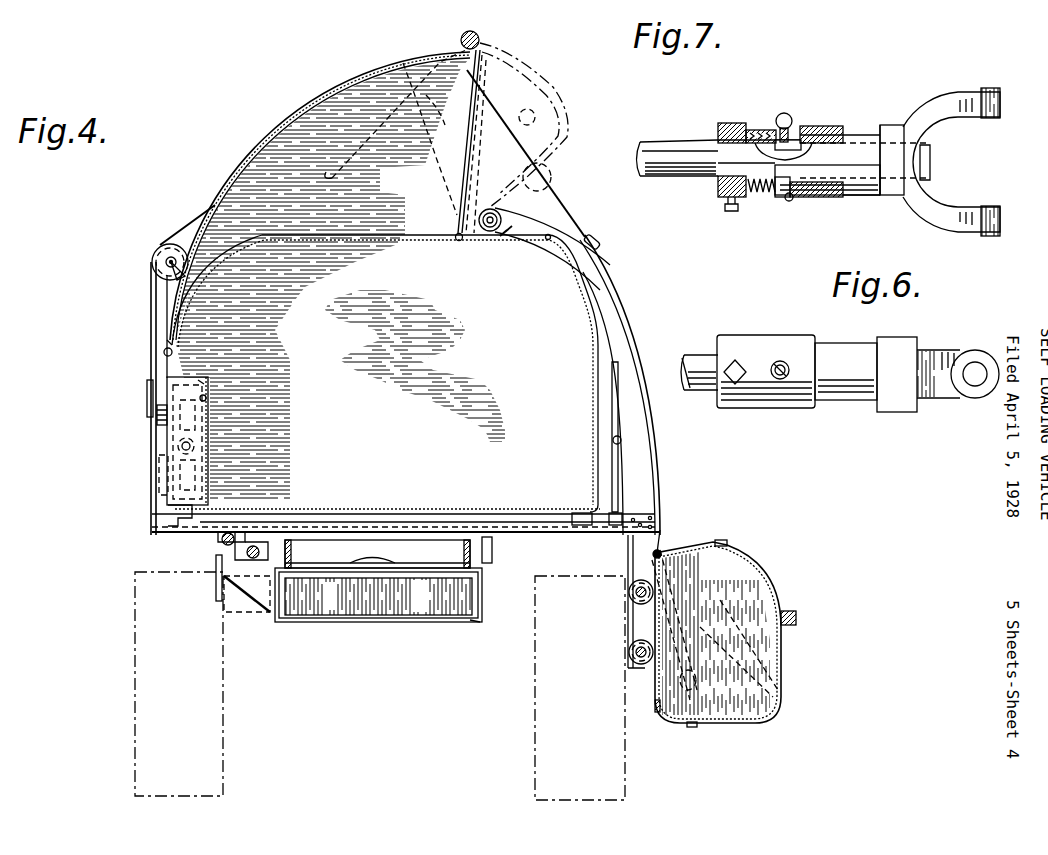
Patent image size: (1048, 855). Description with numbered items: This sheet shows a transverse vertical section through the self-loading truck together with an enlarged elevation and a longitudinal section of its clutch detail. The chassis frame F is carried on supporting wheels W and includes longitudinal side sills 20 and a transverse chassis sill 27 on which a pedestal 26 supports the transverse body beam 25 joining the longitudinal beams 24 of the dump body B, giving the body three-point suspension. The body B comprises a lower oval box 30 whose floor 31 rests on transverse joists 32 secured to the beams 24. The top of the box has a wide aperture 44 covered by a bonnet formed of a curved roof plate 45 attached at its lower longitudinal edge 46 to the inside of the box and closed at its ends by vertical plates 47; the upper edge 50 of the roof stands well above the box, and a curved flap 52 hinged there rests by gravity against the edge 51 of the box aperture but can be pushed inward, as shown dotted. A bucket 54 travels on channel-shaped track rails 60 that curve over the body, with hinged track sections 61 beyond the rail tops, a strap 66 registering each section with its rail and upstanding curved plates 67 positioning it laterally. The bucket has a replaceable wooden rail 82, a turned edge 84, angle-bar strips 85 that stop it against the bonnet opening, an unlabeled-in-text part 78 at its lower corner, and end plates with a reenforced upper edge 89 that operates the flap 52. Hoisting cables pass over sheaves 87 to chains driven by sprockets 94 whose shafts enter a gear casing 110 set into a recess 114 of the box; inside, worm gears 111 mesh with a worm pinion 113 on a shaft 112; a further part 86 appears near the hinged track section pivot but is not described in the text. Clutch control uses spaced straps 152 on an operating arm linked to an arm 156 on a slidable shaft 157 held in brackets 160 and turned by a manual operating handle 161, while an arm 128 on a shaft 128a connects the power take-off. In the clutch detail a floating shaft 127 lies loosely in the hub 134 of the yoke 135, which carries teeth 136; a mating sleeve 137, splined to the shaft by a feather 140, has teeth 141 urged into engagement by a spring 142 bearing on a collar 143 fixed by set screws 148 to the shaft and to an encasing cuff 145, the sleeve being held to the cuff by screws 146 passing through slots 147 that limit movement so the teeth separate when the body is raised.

In FIG. 4, the longitudinal side sill 20 is at (482, 595).
In FIG. 4, the longitudinal beam 24 is at (492, 552).
In FIG. 4, the transverse body beam 25 is at (377, 552).
In FIG. 4, the pedestal 26 is at (372, 565).
In FIG. 4, the transverse chassis sill 27 is at (378, 595).
In FIG. 4, the box 30 is at (596, 386).
In FIG. 4, the floor 31 is at (300, 509).
In FIG. 4, the transverse joist 32 is at (558, 534).
In FIG. 4, the aperture 44 is at (370, 237).
In FIG. 4, the curved roof plate 45 is at (300, 118).
In FIG. 4, the lower longitudinal edge 46 is at (178, 390).
In FIG. 4, the vertical plate 47 is at (262, 165).
In FIG. 4, the upper edge of the bonnet roof 50 is at (462, 44).
In FIG. 4, the edge of the box aperture 51 is at (462, 241).
In FIG. 4, the curved flap 52 is at (455, 160).
In FIG. 4, the bucket 54 is at (782, 662).
In FIG. 4, the track rail 60 is at (620, 333).
In FIG. 4, the hinged track section 61 is at (527, 207).
In FIG. 4, the strap 66 is at (565, 233).
In FIG. 4, the upstanding curved plate 67 is at (602, 245).
In FIG. 4, the bucket pivot 78 is at (697, 684).
In FIG. 4, the wooden rail 82 is at (796, 616).
In FIG. 4, the turned longitudinal edge 84 is at (665, 556).
In FIG. 4, the angle-bar strip 85 is at (700, 632).
In FIG. 4, the cable 86 is at (502, 242).
In FIG. 4, the sheave 87 is at (145, 398).
In FIG. 4, the reenforced upper edge 89 is at (740, 546).
In FIG. 4, the drive sprocket 94 is at (165, 420).
In FIG. 4, the gear casing 110 is at (196, 392).
In FIG. 4, the worm gear 111 is at (205, 399).
In FIG. 4, the shaft 112 is at (212, 436).
In FIG. 4, the worm pinion 113 is at (210, 424).
In FIG. 4, the recess 114 is at (203, 380).
In FIG. 7, the floating shaft 127 is at (668, 137).
In FIG. 6, the floating shaft 127 is at (700, 348).
In FIG. 4, the arm 128 is at (216, 594).
In FIG. 4, the shaft 128a is at (214, 553).
In FIG. 7, the hub 134 is at (858, 128).
In FIG. 6, the hub 134 is at (846, 402).
In FIG. 7, the yoke 135 is at (930, 115).
In FIG. 6, the yoke 135 is at (930, 360).
In FIG. 7, the teeth 136 is at (825, 170).
In FIG. 7, the mating sleeve 137 is at (790, 202).
In FIG. 7, the feather 140 is at (775, 148).
In FIG. 7, the teeth 141 is at (848, 183).
In FIG. 7, the spring 142 is at (758, 130).
In FIG. 7, the collar 143 is at (720, 128).
In FIG. 7, the encasing cuff 145 is at (770, 200).
In FIG. 7, the screw 146 is at (786, 114).
In FIG. 6, the screw 146 is at (782, 360).
In FIG. 7, the slot 147 is at (822, 128).
In FIG. 6, the slot 147 is at (790, 366).
In FIG. 7, the set screw 148 is at (730, 211).
In FIG. 6, the set screw 148 is at (735, 406).
In FIG. 4, the strap 152 is at (208, 455).
In FIG. 4, the arm 156 is at (166, 511).
In FIG. 4, the slidable shaft 157 is at (448, 527).
In FIG. 4, the bracket 160 is at (580, 514).
In FIG. 4, the manual operating handle 161 is at (612, 441).
In FIG. 4, the dump body B is at (147, 356).
In FIG. 4, the chassis frame F is at (376, 618).
In FIG. 4, the supporting wheel W is at (208, 706).